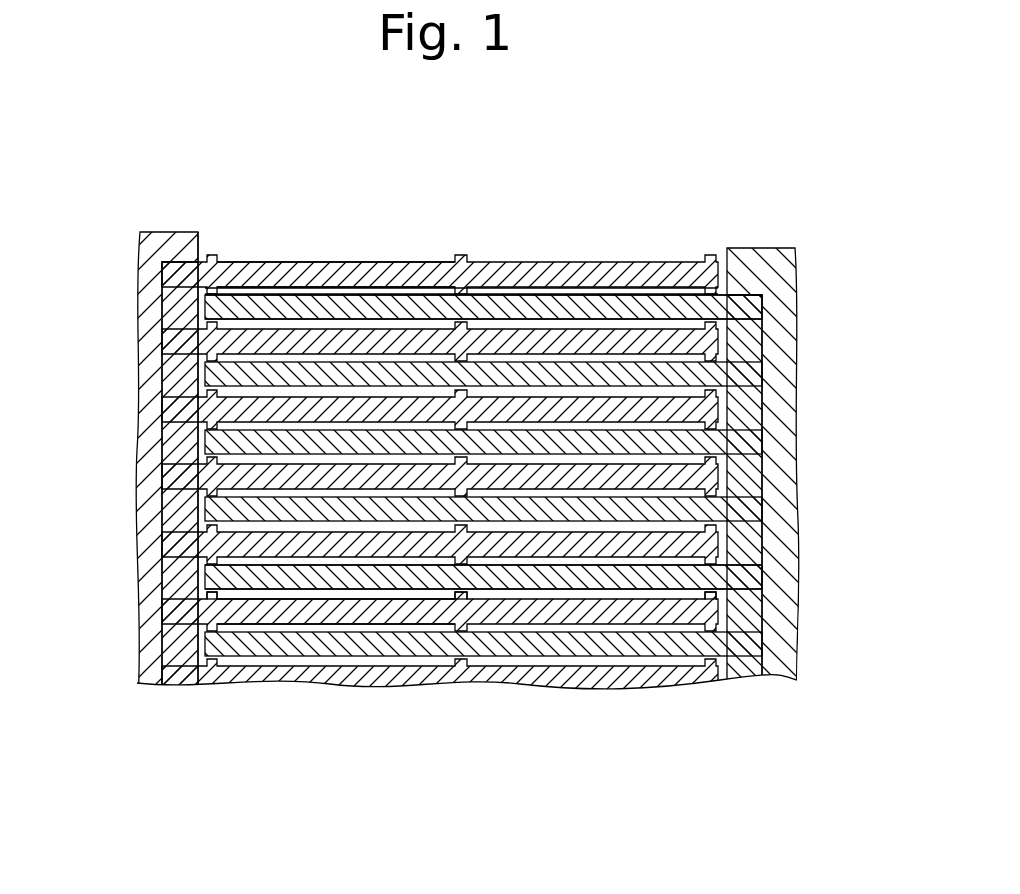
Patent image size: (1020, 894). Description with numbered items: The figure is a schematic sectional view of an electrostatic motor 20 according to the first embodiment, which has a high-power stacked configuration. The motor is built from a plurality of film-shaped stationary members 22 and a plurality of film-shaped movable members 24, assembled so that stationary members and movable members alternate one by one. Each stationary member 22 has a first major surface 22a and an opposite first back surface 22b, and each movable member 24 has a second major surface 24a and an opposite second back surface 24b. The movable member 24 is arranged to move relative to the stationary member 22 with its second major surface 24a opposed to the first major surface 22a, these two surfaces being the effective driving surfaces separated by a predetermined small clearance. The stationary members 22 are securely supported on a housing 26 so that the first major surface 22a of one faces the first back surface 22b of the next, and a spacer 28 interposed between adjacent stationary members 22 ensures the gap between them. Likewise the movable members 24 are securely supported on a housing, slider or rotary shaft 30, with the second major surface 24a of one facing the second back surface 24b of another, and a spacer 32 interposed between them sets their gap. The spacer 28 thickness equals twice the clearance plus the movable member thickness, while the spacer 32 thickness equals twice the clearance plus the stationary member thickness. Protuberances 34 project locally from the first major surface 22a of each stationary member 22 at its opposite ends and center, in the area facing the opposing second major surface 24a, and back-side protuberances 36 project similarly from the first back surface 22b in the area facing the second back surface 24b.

The electrostatic motor 20 is at (672, 197).
The stationary member 22 is at (402, 260).
The first major surface 22a is at (350, 292).
The first back surface 22b is at (443, 262).
The movable member 24 is at (308, 297).
The second major surface 24a is at (277, 292).
The second back surface 24b is at (240, 322).
The housing 26 is at (137, 243).
The spacer 28 is at (170, 380).
The housing 30 is at (752, 253).
The spacer 32 is at (762, 400).
The protuberance 34 is at (223, 288).
The back-side protuberance 36 is at (208, 593).